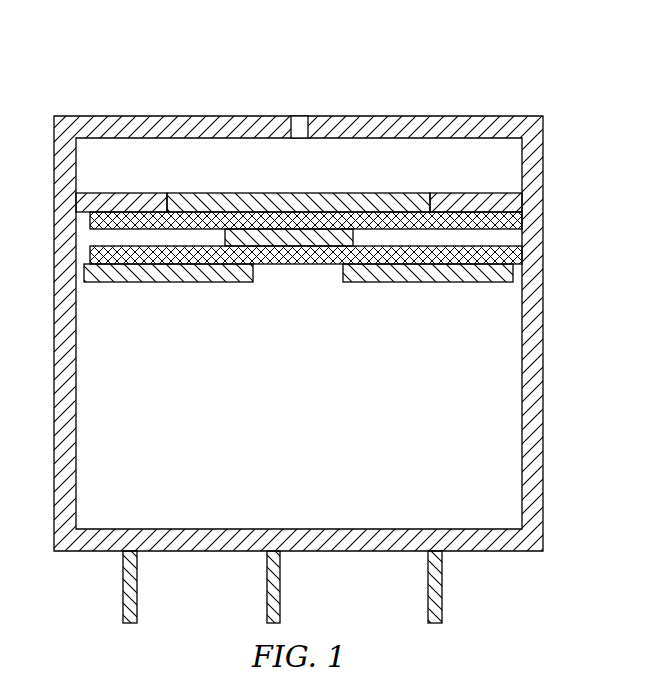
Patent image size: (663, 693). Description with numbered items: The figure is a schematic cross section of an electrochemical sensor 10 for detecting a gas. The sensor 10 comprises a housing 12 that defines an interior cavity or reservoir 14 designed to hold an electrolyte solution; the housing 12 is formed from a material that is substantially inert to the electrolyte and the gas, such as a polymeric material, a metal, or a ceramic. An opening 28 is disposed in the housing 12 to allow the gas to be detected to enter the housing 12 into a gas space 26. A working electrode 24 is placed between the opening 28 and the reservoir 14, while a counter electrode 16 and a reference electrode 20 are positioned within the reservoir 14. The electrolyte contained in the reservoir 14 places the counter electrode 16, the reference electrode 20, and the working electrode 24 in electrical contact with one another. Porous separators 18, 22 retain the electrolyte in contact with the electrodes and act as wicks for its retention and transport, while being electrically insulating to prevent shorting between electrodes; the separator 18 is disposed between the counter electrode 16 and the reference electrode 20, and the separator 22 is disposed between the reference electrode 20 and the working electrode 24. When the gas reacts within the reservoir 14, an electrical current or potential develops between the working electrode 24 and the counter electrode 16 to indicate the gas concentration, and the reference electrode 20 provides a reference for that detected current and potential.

The electrochemical sensor 10 is at (495, 60).
The housing 12 is at (75, 551).
The reservoir 14 is at (301, 451).
The counter electrode 16 is at (186, 283).
The porous separator 18 is at (90, 252).
The reference electrode 20 is at (315, 240).
The porous separator 22 is at (90, 220).
The working electrode 24 is at (196, 193).
The gas space 26 is at (301, 175).
The opening 28 is at (299, 128).